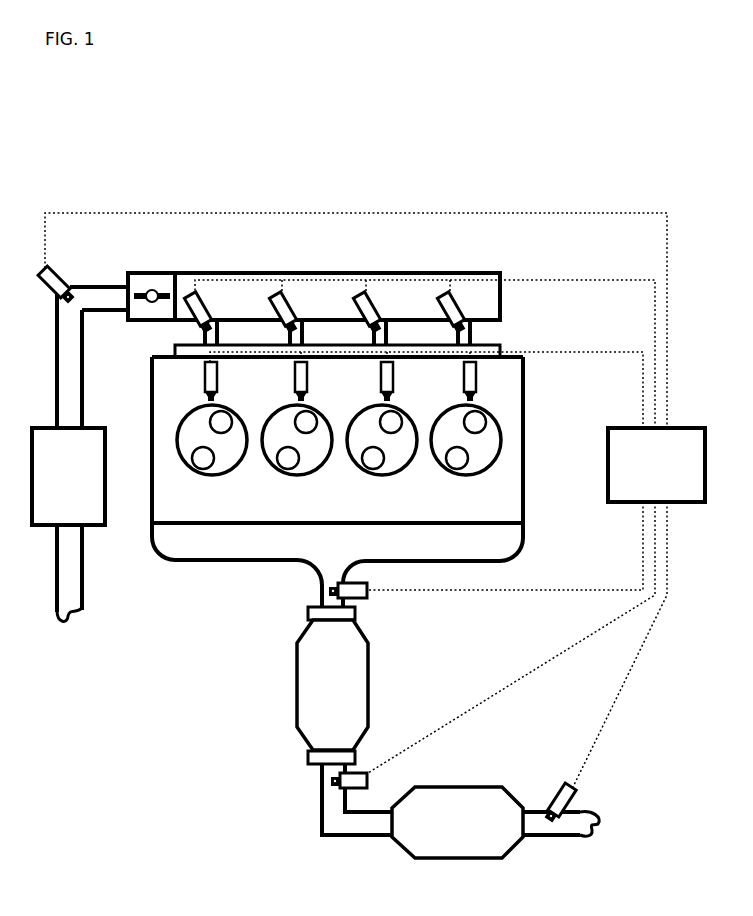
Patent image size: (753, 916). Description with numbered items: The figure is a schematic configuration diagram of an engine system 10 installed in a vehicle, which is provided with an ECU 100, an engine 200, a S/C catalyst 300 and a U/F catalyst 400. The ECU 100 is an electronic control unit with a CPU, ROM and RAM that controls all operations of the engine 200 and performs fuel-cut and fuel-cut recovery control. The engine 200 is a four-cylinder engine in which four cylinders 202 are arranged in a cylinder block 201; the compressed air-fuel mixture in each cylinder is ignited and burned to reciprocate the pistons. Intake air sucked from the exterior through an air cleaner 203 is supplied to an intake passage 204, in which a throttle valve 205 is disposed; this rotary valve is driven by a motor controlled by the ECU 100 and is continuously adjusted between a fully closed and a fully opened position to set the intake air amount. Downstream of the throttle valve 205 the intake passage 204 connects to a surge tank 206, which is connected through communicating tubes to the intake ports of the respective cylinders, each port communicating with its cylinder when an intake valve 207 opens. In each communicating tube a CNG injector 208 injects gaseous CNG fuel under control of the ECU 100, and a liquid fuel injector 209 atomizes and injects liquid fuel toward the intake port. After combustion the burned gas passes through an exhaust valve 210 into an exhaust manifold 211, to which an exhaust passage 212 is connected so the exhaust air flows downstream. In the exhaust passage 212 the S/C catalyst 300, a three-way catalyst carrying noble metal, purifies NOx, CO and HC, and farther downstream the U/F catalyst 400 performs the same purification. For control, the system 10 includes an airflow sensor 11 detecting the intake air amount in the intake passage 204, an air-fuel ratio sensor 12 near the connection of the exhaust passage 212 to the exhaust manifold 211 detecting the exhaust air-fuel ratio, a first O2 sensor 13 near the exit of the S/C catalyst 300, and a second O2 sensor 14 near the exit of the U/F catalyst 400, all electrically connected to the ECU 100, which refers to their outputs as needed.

The engine system 10 is at (683, 91).
The engine 200 is at (574, 192).
The ECU 100 is at (608, 428).
The airflow sensor 11 is at (66, 272).
The air-fuel ratio sensor 12 is at (367, 598).
The first O2 sensor 13 is at (368, 782).
The second O2 sensor 14 is at (575, 790).
The cylinder block 201 is at (151, 380).
The cylinders 202 is at (240, 465).
The air cleaner 203 is at (105, 525).
The intake passage 204 is at (68, 412).
The throttle valve 205 is at (130, 273).
The surge tank 206 is at (182, 273).
The intake valve 207 is at (221, 433).
The CNG injector 208 is at (462, 307).
The liquid fuel injector 209 is at (218, 380).
The exhaust valve 210 is at (193, 463).
The exhaust manifold 211 is at (220, 560).
The exhaust passage 212 is at (330, 820).
The S/C catalyst 300 is at (296, 665).
The U/F catalyst 400 is at (410, 855).